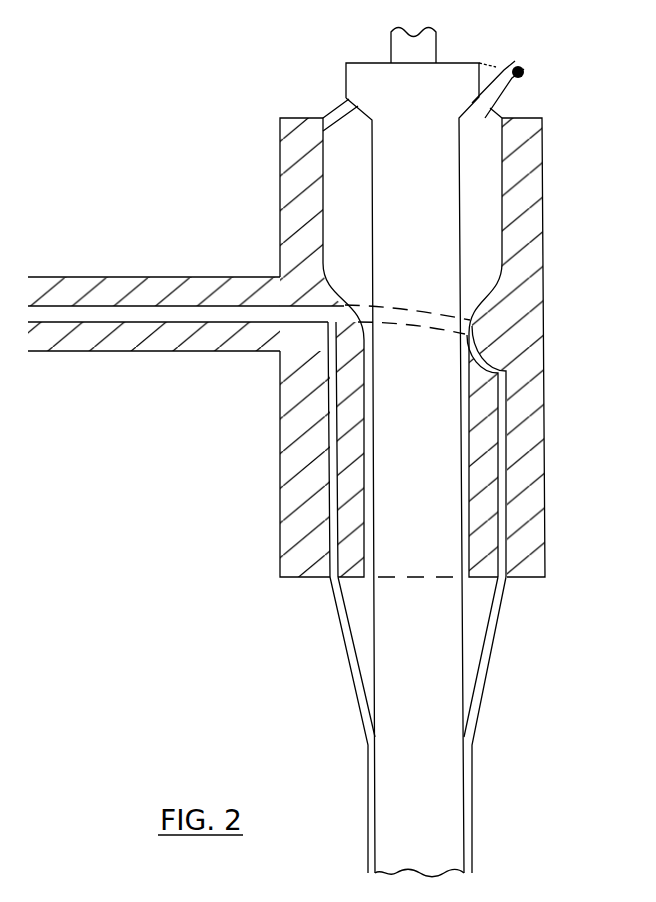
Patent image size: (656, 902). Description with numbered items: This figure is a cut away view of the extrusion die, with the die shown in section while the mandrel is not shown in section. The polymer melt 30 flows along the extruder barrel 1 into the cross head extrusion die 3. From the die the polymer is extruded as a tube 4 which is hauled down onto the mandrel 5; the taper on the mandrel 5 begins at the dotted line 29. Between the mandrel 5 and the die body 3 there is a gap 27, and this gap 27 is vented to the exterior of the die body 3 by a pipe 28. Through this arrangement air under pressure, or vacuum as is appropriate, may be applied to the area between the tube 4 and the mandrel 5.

The extruder barrel 1 is at (164, 284).
The cross head extrusion die 3 is at (537, 307).
The tube 4 is at (475, 727).
The mandrel 5 is at (450, 829).
The gap 27 is at (462, 431).
The pipe 28 is at (503, 80).
The dotted line 29 is at (428, 577).
The polymer melt 30 is at (166, 323).